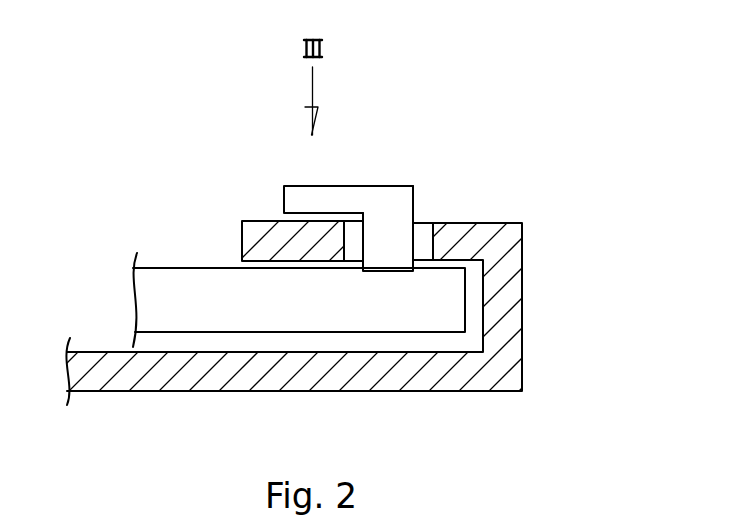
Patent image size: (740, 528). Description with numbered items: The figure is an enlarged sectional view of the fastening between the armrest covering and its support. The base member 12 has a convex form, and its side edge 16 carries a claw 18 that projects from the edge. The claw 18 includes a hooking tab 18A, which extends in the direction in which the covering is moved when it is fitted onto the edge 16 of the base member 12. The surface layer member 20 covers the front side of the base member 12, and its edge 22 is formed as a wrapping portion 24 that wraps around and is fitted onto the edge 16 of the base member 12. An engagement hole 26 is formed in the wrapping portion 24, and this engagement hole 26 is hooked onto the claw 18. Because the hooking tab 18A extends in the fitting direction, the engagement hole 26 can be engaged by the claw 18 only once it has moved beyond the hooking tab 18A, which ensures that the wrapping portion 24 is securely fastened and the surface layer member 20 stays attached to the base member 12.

The base member 12 is at (299, 352).
The edge of the base member 16 is at (265, 305).
The claw 18 is at (348, 189).
The hooking tab 18A is at (328, 197).
The surface layer member 20 is at (370, 288).
The edge of the surface layer member 22 is at (370, 288).
The wrapping portion 24 is at (267, 233).
The engagement hole 26 is at (423, 237).